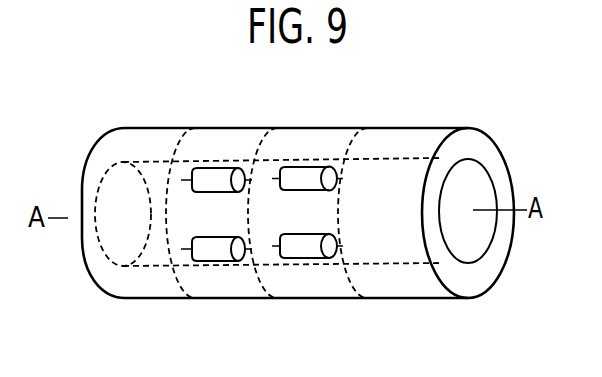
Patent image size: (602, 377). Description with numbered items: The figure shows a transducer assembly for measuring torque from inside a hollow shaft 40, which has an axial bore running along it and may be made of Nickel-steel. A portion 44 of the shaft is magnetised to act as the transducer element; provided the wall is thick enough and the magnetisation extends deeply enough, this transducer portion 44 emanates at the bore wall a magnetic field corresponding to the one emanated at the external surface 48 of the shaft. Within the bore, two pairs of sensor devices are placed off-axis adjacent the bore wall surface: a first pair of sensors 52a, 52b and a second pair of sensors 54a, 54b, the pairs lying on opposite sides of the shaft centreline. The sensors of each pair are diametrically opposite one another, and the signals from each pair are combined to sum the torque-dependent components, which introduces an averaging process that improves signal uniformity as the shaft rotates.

The hollow shaft 40 is at (512, 137).
The external surface 48 is at (142, 128).
The transducer portion 44 is at (377, 125).
The sensor 52a is at (203, 168).
The sensor 52b is at (220, 252).
The sensor 54a is at (315, 167).
The sensor 54b is at (310, 250).